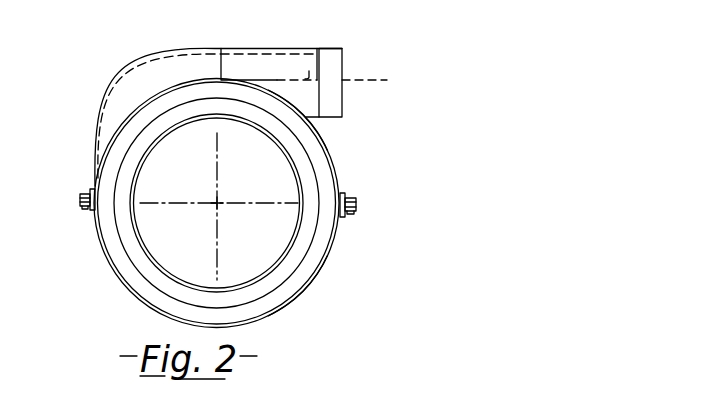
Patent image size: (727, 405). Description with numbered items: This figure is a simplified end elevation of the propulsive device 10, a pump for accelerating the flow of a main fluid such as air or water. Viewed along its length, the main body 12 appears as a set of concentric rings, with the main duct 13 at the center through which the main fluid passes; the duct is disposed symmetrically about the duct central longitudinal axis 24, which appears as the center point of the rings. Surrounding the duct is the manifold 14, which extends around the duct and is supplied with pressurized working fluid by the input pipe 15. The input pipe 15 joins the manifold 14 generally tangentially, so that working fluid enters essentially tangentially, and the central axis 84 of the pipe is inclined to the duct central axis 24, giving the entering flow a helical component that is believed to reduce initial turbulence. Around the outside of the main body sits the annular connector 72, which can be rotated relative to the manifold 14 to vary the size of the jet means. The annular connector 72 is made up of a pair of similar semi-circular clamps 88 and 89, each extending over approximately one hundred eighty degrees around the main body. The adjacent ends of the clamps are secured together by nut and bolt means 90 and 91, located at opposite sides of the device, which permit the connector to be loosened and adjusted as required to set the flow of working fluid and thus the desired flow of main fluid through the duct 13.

The propulsive device 10 is at (317, 288).
The main body 12 is at (154, 256).
The main duct 13 is at (202, 172).
The manifold 14 is at (328, 160).
The input pipe 15 is at (258, 70).
The duct central longitudinal axis 24 is at (217, 206).
The annular connector 72 is at (340, 234).
The central axis 84 is at (342, 62).
The semi-circular clamp 88 is at (322, 136).
The semi-circular clamp 89 is at (327, 258).
The nut and bolt means 90 is at (86, 191).
The nut and bolt means 91 is at (357, 195).